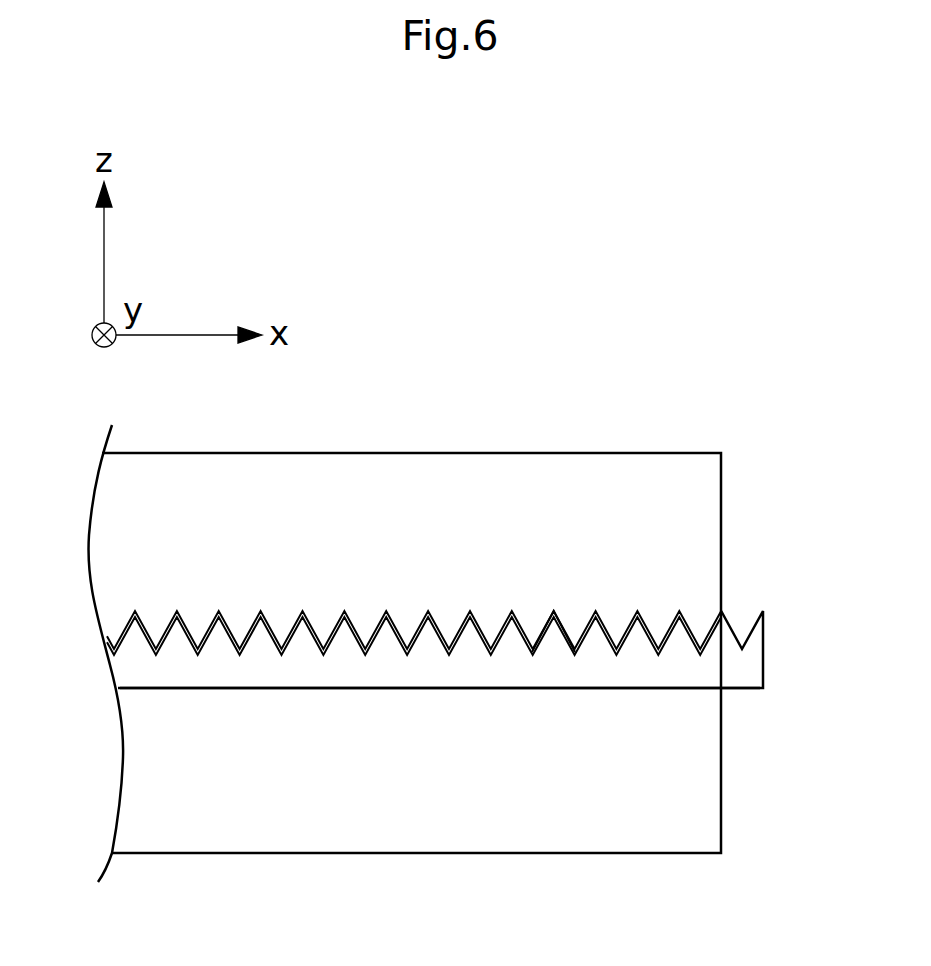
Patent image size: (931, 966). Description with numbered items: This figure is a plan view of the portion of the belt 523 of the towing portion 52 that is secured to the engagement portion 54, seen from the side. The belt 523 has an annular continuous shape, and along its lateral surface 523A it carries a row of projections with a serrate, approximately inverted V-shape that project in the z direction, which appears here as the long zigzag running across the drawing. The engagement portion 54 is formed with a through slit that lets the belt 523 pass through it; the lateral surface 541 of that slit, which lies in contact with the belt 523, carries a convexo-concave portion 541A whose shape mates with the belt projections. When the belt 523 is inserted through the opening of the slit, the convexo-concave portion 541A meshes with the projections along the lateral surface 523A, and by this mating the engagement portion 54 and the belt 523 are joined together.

The towing portion 52 is at (757, 701).
The belt 523 is at (397, 688).
The lateral surface 523A is at (637, 637).
The engagement portion 54 is at (455, 842).
The lateral surface 541 is at (568, 630).
The convexo-concave portion 541A is at (533, 622).